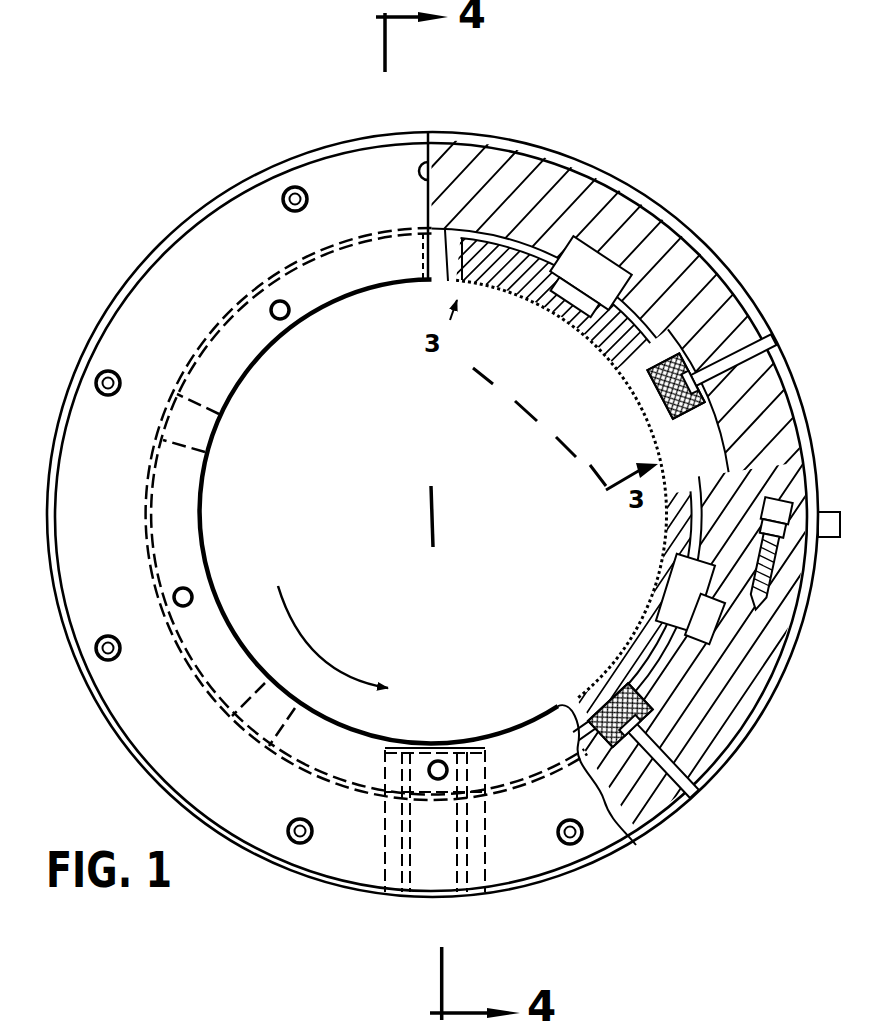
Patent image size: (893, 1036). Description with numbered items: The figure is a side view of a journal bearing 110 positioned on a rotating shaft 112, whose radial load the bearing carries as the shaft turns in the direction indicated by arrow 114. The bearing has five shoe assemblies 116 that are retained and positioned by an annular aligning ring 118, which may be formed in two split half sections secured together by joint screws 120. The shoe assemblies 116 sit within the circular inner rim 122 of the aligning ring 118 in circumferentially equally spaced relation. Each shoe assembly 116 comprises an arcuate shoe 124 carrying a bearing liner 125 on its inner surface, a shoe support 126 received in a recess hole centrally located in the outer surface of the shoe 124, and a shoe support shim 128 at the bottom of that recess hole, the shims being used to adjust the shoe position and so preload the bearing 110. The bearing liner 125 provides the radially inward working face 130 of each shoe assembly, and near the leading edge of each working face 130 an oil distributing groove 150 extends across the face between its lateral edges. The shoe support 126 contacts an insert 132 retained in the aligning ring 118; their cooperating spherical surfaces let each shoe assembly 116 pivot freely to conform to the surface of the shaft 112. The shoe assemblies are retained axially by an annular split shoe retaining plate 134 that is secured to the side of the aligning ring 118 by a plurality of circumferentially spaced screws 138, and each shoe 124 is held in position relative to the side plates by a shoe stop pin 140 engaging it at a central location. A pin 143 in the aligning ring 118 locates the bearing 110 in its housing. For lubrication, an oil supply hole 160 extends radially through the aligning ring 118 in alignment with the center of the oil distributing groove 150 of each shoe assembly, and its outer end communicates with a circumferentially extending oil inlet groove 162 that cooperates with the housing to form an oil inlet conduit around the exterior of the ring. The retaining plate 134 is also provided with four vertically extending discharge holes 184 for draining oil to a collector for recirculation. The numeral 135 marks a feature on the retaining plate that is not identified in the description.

The journal bearing 110 is at (182, 195).
The shaft 112 is at (342, 568).
The arrow 114 is at (297, 660).
The shoe assembly 116 is at (284, 318).
The annular aligning ring 118 is at (548, 185).
The joint screw 120 is at (790, 502).
The circular inner rim 122 is at (428, 292).
The arcuate shoe 124 is at (462, 292).
The bearing liner 125 is at (562, 352).
The shoe support 126 is at (506, 296).
The shoe support shim 128 is at (560, 326).
The working face 130 is at (653, 622).
The insert 132 is at (620, 242).
The shoe retaining plate 134 is at (270, 194).
The bolt hole 135 is at (418, 172).
The screw 138 is at (110, 370).
The shoe stop pin 140 is at (284, 301).
The pin 143 is at (829, 540).
The oil distributing groove 150 is at (660, 420).
The oil supply hole 160 is at (746, 356).
The oil inlet groove 162 is at (746, 712).
The discharge hole 184 is at (383, 892).